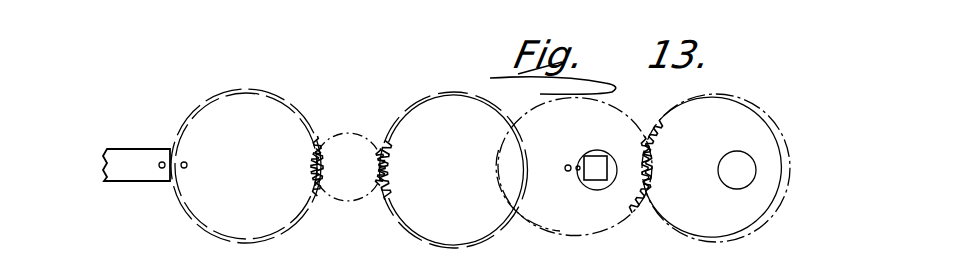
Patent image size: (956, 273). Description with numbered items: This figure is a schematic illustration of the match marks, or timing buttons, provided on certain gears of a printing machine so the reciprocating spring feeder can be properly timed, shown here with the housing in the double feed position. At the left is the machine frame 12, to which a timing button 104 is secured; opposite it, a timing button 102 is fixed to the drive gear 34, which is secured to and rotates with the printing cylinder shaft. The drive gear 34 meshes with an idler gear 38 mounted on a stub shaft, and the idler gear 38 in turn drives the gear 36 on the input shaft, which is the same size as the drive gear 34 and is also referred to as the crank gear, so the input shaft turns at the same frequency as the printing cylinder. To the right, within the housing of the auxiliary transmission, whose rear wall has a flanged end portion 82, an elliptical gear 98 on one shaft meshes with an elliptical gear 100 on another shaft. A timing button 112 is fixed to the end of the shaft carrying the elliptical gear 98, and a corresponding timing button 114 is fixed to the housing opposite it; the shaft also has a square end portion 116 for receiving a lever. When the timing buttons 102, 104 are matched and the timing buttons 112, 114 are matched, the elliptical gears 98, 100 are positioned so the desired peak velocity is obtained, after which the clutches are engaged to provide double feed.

The frame 12 is at (137, 177).
The drive gear 34 is at (268, 93).
The gear 36 is at (452, 245).
The idler gear 38 is at (350, 200).
The flanged end portion 82 is at (615, 177).
The elliptical gear 98 is at (632, 214).
The elliptical gear 100 is at (766, 120).
The timing button 102 is at (188, 162).
The timing button 104 is at (160, 162).
The timing button 112 is at (583, 155).
The timing button 114 is at (567, 172).
The square end portion 116 is at (608, 157).